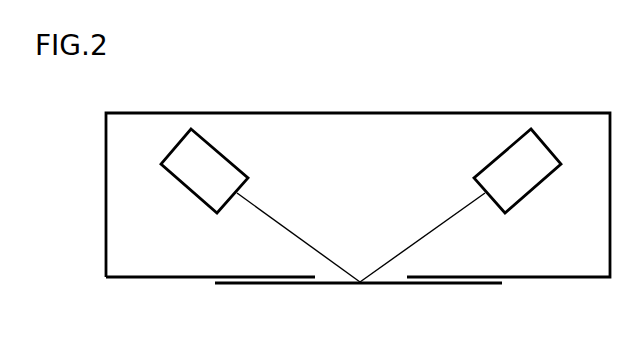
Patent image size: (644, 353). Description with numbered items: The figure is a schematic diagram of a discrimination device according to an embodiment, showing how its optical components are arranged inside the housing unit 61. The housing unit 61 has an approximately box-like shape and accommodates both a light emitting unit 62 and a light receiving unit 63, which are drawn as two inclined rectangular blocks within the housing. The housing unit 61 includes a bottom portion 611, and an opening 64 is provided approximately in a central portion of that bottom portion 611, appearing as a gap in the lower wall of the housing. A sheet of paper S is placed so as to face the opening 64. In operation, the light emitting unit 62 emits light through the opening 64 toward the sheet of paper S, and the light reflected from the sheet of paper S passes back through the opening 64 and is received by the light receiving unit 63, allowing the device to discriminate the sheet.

The housing unit 61 is at (578, 113).
The bottom portion 611 is at (145, 277).
The light emitting unit 62 is at (208, 143).
The light receiving unit 63 is at (508, 143).
The opening 64 is at (407, 277).
The sheet of paper S is at (245, 285).